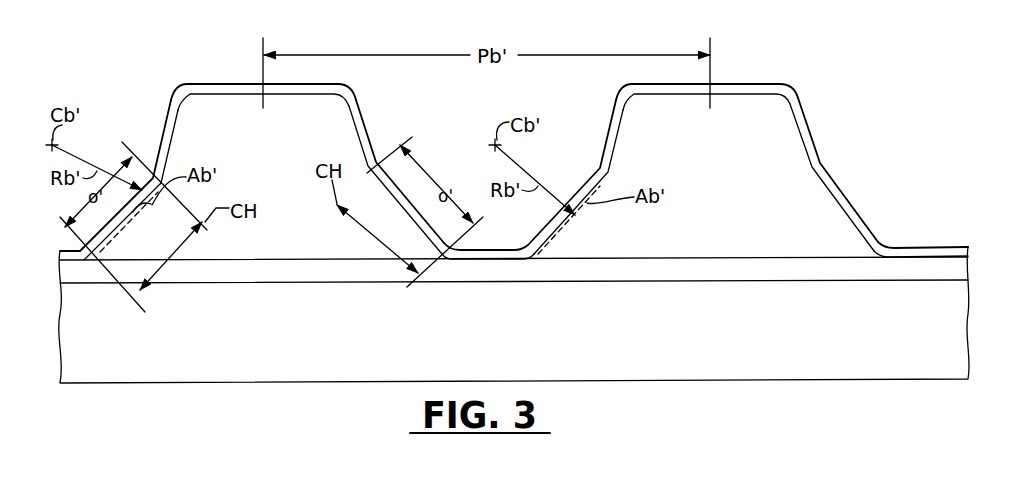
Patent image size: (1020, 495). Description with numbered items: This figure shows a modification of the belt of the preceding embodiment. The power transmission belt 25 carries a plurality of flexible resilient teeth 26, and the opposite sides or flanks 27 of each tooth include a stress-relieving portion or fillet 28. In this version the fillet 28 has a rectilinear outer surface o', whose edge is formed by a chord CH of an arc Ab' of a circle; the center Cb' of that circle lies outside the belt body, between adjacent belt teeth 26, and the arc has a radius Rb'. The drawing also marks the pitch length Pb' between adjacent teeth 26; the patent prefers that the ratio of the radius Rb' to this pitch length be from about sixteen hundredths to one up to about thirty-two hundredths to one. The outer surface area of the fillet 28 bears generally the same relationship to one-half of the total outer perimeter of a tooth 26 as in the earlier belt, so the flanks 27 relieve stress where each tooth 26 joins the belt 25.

The power transmission belt 25 is at (812, 100).
The flexible resilient teeth 26 is at (205, 110).
The flanks 27 is at (160, 147).
The stress-relieving portion or fillet 28 is at (96, 256).